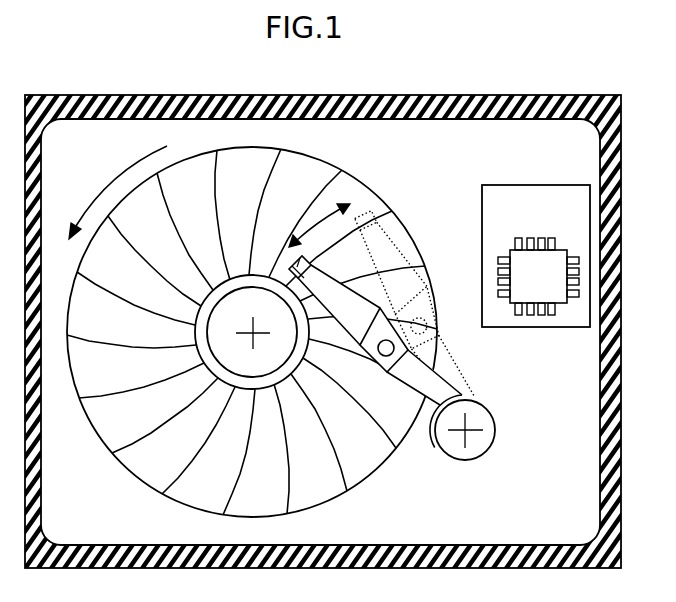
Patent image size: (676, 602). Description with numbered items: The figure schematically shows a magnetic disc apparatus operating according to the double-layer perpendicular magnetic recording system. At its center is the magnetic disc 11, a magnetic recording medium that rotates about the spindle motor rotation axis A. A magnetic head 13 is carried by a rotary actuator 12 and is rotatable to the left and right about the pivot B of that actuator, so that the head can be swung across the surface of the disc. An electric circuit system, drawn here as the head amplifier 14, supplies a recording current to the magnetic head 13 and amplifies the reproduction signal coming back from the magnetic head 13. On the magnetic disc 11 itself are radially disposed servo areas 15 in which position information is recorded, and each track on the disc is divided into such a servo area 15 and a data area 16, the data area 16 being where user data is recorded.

The magnetic disc 11 is at (405, 222).
The rotary actuator 12 is at (488, 413).
The magnetic head 13 is at (312, 262).
The head amplifier 14 is at (530, 262).
The servo area 15 is at (182, 477).
The data area 16 is at (367, 458).
The spindle motor rotation axis A is at (250, 335).
The pivot B is at (465, 430).